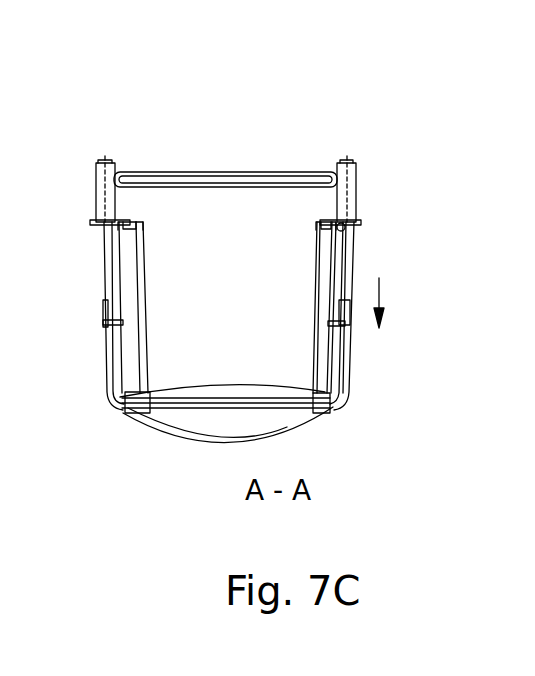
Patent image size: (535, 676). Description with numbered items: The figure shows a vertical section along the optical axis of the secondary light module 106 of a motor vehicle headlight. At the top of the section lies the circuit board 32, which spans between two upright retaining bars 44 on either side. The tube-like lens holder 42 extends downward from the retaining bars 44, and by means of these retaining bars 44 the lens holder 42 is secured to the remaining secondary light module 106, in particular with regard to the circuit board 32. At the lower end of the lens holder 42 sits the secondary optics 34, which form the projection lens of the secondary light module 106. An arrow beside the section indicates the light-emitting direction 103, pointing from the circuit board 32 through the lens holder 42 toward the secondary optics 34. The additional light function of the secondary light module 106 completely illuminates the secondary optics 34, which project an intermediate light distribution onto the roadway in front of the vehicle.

The secondary light module 106 is at (316, 142).
The retaining bars 44 is at (95, 183).
The circuit board 32 is at (205, 171).
The tube-like lens holder 42 is at (295, 253).
The secondary optics 34 is at (273, 417).
The light-emitting direction 103 is at (380, 297).